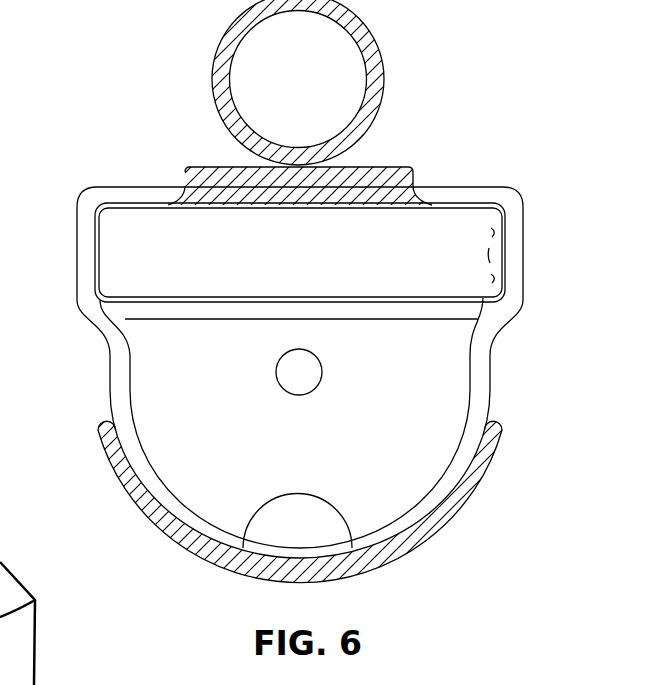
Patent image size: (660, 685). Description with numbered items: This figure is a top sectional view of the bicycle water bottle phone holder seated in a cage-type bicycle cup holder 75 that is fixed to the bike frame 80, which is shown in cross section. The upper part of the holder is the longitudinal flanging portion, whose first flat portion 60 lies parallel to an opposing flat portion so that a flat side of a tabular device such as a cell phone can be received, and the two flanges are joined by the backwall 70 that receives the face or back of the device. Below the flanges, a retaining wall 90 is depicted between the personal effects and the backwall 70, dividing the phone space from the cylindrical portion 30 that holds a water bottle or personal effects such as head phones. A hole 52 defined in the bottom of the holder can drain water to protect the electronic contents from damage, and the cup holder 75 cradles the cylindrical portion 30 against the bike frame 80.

The bike frame 80 is at (330, 342).
The backwall 70 is at (490, 187).
The bicycle cup holder 75 is at (186, 190).
The first flat portion 60 is at (76, 262).
The cylindrical portion 30 is at (112, 386).
The retaining wall 90 is at (185, 326).
The hole 52 is at (276, 372).